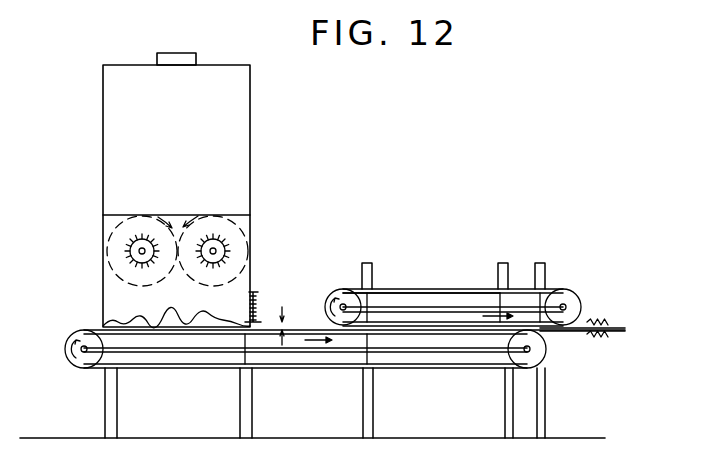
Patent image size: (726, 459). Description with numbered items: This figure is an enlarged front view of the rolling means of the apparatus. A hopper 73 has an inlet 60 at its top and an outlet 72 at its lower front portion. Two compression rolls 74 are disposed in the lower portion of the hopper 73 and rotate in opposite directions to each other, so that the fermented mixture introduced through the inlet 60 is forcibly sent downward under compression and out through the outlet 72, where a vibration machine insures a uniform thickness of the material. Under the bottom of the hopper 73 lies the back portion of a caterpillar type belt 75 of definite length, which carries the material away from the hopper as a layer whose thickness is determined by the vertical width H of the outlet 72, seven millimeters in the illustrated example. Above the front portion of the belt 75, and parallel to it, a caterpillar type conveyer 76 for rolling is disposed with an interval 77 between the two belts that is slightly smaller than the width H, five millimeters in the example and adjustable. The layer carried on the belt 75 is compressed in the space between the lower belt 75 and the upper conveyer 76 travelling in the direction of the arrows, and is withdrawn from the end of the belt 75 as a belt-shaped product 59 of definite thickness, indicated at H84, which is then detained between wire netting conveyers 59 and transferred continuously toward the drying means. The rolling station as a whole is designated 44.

The inlet 60 is at (196, 53).
The hopper 73 is at (265, 120).
The compression rolls 74 is at (198, 262).
The spreading station 44 is at (312, 250).
The outlet 72 is at (257, 323).
The vertical width of the outlet H is at (287, 322).
The caterpillar type belt 75 is at (192, 333).
The caterpillar type conveyer for rolling 76 is at (445, 322).
The interval 77 is at (395, 322).
The wire netting conveyers 59 is at (598, 318).
The mat thickness / plate H84 is at (627, 331).